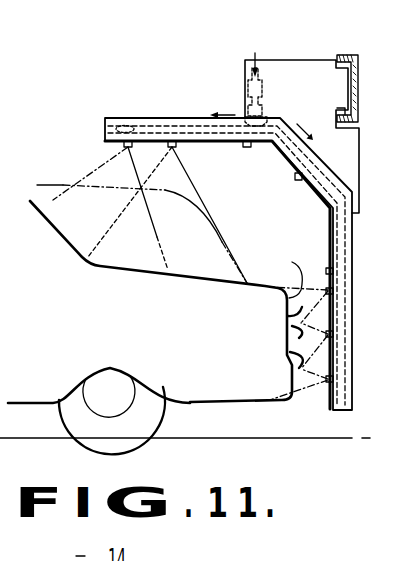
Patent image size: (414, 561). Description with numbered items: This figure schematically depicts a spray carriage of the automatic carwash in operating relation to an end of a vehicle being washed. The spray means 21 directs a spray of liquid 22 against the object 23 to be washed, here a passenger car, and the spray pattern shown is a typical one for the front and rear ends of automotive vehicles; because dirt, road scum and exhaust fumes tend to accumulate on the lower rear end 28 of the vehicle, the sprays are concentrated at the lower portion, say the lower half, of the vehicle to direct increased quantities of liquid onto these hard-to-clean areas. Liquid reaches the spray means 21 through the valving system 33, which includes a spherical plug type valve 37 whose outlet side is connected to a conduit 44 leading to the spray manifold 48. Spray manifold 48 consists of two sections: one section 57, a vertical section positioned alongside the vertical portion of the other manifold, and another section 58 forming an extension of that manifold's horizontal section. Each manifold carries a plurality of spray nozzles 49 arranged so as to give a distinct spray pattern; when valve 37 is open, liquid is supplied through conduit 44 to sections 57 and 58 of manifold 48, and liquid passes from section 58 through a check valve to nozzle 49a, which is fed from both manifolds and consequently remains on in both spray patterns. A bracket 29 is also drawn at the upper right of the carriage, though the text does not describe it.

The spray means 21 is at (94, 133).
The spray of liquid 22 is at (88, 170).
The object to be washed 23 is at (52, 321).
The rear end 28 is at (286, 273).
The mounting bracket 29 is at (357, 55).
The valving system 33 is at (272, 47).
The valve 37 is at (244, 84).
The conduit 44 is at (263, 119).
The spray manifold 48 is at (330, 220).
The spray nozzles 49 is at (128, 148).
The spray nozzle 49a is at (173, 148).
The section of spray manifold 57 is at (353, 278).
The section of spray manifold 58 is at (134, 117).